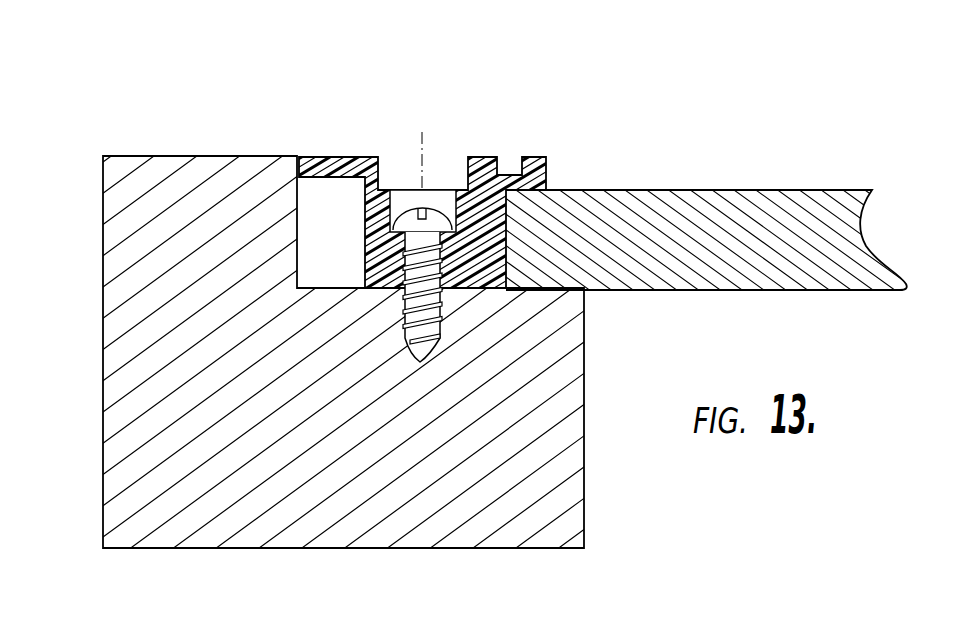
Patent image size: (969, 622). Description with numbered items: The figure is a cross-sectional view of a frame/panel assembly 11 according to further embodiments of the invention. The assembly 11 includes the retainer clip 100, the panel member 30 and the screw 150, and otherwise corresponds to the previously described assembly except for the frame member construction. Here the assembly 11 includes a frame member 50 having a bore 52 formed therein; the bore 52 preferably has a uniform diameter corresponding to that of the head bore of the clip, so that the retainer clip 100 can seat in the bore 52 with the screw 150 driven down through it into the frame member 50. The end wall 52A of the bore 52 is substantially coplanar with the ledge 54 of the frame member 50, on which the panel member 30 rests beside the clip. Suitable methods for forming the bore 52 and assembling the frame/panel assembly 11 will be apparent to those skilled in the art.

The frame/panel assembly 11 is at (640, 113).
The panel member 30 is at (752, 190).
The frame member 50 is at (163, 398).
The bore 52 is at (300, 221).
The end wall 52A is at (327, 288).
The ledge 54 is at (538, 292).
The retainer clip 100 is at (395, 142).
The screw 150 is at (410, 286).